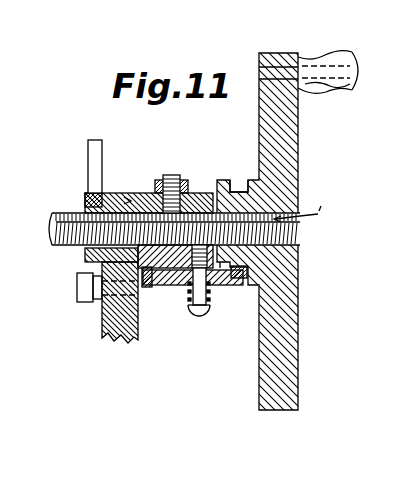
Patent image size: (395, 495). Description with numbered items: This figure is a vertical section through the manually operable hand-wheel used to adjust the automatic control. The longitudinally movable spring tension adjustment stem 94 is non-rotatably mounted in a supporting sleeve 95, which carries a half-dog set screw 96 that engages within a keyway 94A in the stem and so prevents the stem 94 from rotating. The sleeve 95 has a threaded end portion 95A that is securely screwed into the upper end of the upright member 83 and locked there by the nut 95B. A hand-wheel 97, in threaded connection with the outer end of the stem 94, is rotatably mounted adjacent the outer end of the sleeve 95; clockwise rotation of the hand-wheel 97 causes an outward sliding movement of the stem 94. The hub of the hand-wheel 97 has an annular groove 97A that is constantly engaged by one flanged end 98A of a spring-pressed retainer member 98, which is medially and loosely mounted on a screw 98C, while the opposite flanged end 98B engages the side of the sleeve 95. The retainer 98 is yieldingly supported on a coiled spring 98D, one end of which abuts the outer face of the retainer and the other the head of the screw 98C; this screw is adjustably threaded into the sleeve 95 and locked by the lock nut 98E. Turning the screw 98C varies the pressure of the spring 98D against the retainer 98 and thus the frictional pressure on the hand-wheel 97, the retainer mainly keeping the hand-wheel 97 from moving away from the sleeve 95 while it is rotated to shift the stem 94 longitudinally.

The upright member 83 is at (105, 328).
The spring tension adjustment stem 94 is at (67, 216).
The keyway 94A is at (311, 206).
The supporting sleeve 95 is at (197, 196).
The threaded end portion 95A is at (127, 200).
The nut 95B is at (86, 196).
The half-dog set screw 96 is at (177, 176).
The hand-wheel 97 is at (291, 141).
The annular groove 97A is at (239, 188).
The spring-pressed retainer member 98 is at (185, 268).
The flanged end 98A is at (259, 285).
The opposite flanged end 98B is at (153, 278).
The screw 98C is at (198, 318).
The coiled spring 98D is at (215, 288).
The lock nut 98E is at (158, 288).